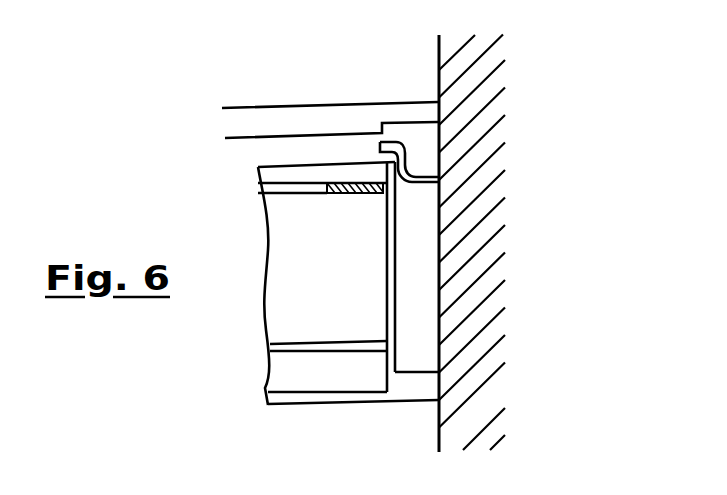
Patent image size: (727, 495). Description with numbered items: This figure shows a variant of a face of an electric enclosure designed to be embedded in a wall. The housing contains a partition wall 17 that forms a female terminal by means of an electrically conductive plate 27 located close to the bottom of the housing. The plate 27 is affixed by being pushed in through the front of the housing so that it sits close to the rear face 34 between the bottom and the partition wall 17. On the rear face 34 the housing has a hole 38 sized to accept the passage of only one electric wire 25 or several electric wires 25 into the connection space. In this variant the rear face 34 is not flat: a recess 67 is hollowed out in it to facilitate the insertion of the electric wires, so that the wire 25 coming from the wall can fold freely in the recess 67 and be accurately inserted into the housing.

The partition wall 17 is at (297, 193).
The electric wire 25 is at (428, 185).
The electrically conductive plate 27 is at (356, 190).
The rear face 34 is at (397, 243).
The hole 38 is at (398, 139).
The recess 67 is at (410, 325).